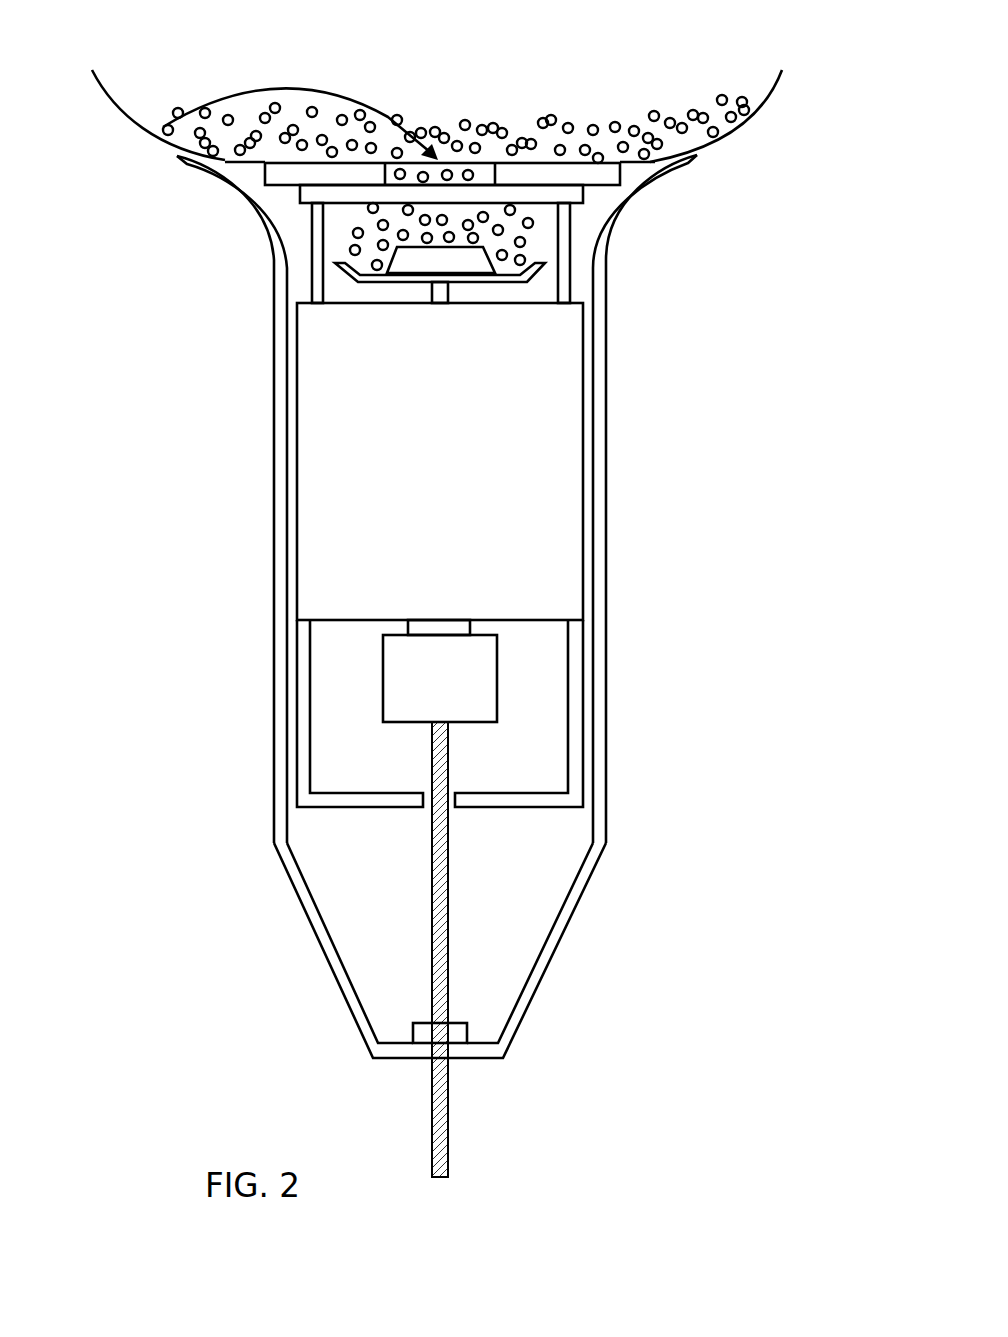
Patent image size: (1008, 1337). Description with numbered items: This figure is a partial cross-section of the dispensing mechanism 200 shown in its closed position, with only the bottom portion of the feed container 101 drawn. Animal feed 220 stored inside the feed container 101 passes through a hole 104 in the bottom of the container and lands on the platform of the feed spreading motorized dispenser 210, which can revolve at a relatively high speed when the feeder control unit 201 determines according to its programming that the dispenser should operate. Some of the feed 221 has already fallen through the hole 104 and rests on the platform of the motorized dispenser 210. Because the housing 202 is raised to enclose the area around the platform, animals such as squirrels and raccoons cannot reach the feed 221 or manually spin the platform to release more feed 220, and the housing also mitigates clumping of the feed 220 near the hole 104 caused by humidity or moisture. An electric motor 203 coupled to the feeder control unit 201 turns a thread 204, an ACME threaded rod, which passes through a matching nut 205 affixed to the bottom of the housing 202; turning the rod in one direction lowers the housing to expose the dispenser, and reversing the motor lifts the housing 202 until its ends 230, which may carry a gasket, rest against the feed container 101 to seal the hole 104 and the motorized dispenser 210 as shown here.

The feed container 101 is at (743, 120).
The hole 104 is at (158, 135).
The dispensing mechanism 200 is at (478, 588).
The feeder control unit 201 is at (408, 532).
The housing 202 is at (605, 672).
The electric motor 203 is at (435, 692).
The thread 204 is at (453, 1095).
The nut 205 is at (492, 1012).
The motorized dispenser 210 is at (470, 263).
The animal feed 220 is at (485, 112).
The feed 221 is at (530, 232).
The ends 230 is at (252, 200).